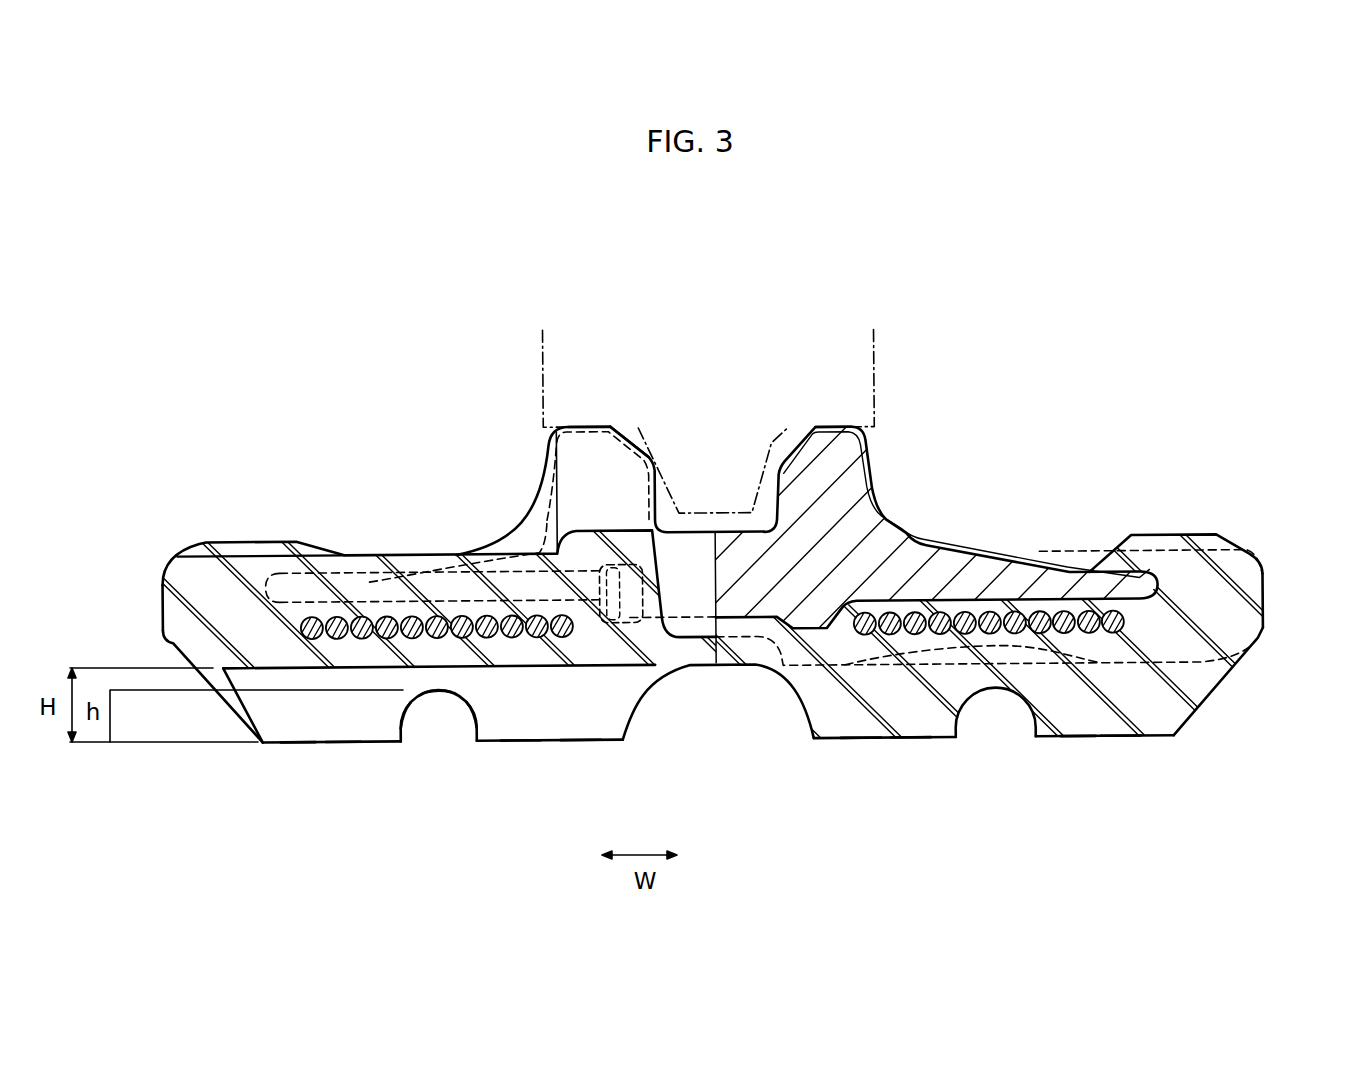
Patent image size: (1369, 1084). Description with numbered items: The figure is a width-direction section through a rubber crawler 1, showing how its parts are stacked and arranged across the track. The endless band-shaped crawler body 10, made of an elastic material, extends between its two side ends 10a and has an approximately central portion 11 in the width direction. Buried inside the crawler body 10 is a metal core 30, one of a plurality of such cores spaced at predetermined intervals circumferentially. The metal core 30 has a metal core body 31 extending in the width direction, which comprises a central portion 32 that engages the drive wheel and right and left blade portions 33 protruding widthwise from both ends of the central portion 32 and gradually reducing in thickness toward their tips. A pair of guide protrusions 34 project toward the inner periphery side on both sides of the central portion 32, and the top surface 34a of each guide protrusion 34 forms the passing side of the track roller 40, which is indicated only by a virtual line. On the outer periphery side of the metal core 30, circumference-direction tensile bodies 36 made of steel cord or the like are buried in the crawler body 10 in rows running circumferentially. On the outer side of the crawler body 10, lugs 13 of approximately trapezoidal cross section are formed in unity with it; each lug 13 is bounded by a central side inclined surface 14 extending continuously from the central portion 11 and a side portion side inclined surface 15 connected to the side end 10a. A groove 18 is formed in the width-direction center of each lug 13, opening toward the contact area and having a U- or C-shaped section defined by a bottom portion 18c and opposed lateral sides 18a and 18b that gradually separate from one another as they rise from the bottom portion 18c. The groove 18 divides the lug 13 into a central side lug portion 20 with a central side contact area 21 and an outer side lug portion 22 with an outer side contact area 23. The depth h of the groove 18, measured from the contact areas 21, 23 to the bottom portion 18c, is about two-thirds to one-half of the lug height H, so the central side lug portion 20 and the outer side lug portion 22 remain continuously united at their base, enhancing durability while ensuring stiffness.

The rubber crawler 1 is at (1207, 273).
The crawler body 10 is at (1217, 530).
The side end 10a is at (163, 610).
The central portion 11 is at (740, 510).
The lug 13 is at (272, 748).
The central side inclined surface 14 is at (632, 718).
The side portion side inclined surface 15 is at (175, 648).
The groove 18 is at (498, 850).
The lateral side 18a is at (405, 728).
The lateral side 18b is at (474, 728).
The bottom portion 18c is at (438, 692).
The central side lug portion 20 is at (580, 742).
The central side contact area 21 is at (520, 742).
The outer side lug portion 22 is at (298, 742).
The outer side contact area 23 is at (342, 743).
The metal core 30 is at (1003, 555).
The metal core body 31 is at (1030, 560).
The central portion 32 is at (692, 615).
The blade portion 33 is at (339, 600).
The guide protrusion 34 is at (590, 471).
The top surface 34a is at (587, 425).
The circumference-direction tensile body 36 is at (385, 615).
The track roller 40 is at (875, 335).